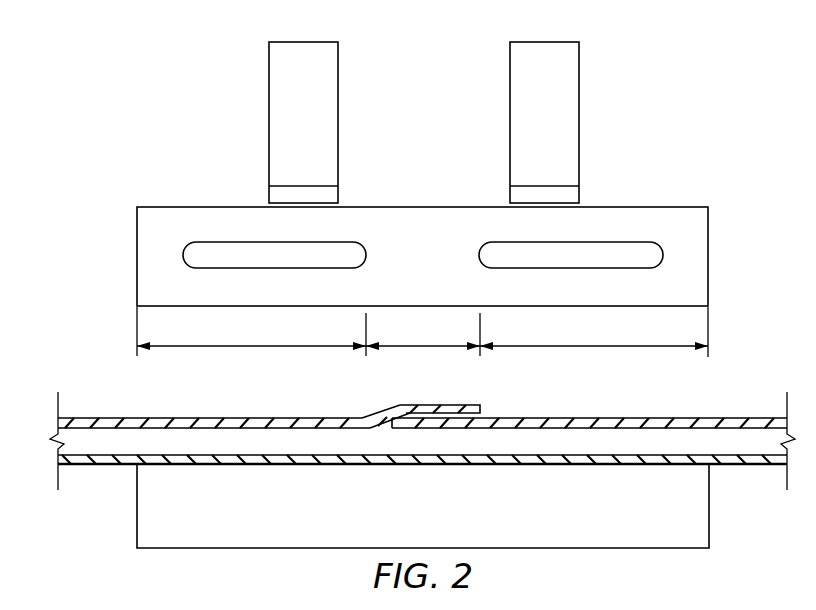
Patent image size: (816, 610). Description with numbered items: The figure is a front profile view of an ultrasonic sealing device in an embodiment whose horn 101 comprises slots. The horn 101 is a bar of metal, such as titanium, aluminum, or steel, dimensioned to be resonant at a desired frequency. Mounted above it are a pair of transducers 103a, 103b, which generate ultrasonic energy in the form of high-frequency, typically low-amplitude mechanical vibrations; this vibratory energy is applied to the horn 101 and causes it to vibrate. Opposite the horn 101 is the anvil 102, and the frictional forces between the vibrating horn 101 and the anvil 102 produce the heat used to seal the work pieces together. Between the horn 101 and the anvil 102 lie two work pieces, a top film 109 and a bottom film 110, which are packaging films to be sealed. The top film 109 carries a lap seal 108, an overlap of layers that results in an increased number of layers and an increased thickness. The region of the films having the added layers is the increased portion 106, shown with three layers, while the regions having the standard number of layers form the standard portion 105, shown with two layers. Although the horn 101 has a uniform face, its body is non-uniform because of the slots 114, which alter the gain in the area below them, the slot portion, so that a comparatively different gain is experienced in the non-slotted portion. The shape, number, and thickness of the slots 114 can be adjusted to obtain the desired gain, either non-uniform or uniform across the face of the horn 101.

The horn 101 is at (137, 255).
The anvil 102 is at (137, 497).
The transducer 103a is at (269, 122).
The transducer 103b is at (580, 122).
The standard portion 105 is at (272, 348).
The increased portion 106 is at (411, 348).
The lap seal 108 is at (473, 403).
The top film 109 is at (128, 417).
The bottom film 110 is at (228, 460).
The slots 114 is at (218, 255).